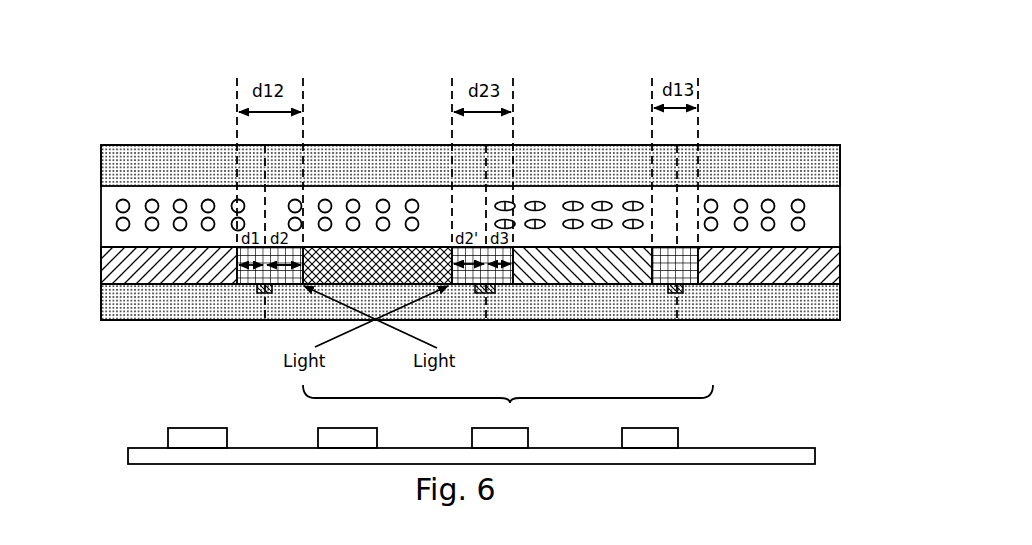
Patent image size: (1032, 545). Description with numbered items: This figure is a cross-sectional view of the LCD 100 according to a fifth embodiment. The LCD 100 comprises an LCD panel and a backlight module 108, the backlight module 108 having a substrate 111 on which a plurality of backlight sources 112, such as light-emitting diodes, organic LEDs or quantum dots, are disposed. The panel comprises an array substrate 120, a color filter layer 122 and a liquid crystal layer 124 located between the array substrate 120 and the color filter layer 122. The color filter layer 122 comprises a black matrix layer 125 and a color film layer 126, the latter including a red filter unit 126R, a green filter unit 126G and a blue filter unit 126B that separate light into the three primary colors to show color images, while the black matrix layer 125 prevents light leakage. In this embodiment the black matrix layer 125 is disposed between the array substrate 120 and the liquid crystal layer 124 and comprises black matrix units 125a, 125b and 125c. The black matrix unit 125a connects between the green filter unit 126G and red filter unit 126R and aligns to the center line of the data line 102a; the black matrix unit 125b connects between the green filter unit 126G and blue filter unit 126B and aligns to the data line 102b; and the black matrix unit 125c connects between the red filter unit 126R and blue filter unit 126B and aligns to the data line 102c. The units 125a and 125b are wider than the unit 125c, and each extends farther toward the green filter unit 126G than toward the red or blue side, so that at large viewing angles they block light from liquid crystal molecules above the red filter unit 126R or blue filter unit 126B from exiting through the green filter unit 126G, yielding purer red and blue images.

The LCD 100 is at (494, 45).
The backlight module 108 is at (494, 431).
The substrate 111 is at (287, 455).
The backlight sources 112 is at (200, 440).
The array substrate 120 is at (97, 310).
The color filter layer 122 is at (90, 263).
The liquid crystal layer 124 is at (630, 195).
The black matrix layer 125 is at (508, 404).
The black matrix unit 125a is at (278, 285).
The black matrix unit 125b is at (497, 285).
The black matrix unit 125c is at (693, 270).
The data line 102a is at (257, 292).
The data line 102b is at (477, 292).
The data line 102c is at (667, 292).
The color film layer 126 is at (787, 272).
The red filter unit 126R is at (137, 268).
The green filter unit 126G is at (383, 262).
The blue filter unit 126B is at (640, 267).